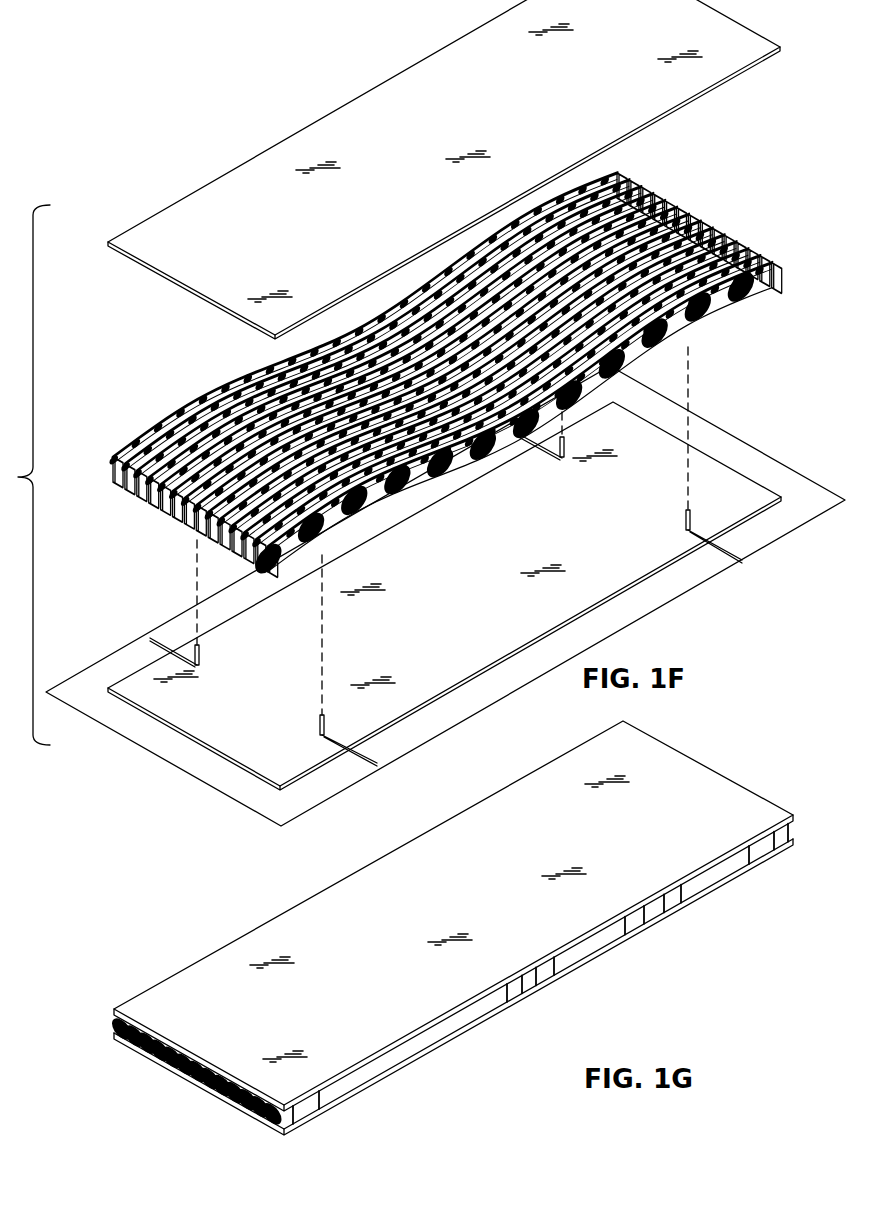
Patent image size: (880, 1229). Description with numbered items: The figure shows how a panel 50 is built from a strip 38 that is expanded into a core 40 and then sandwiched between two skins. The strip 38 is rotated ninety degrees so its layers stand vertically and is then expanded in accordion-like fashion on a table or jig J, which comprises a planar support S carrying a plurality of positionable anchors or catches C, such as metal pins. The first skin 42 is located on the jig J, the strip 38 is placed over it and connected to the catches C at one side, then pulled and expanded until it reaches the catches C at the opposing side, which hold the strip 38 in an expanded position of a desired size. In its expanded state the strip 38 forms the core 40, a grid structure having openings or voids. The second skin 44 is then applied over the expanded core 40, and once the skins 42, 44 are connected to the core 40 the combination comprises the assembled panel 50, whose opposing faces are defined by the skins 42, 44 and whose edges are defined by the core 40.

In FIG. 1F, the strip 38 is at (719, 231).
In FIG. 1F, the core 40 is at (453, 370).
In FIG. 1G, the core 40 is at (722, 870).
In FIG. 1F, the first skin 42 is at (202, 728).
In FIG. 1G, the first skin 42 is at (301, 1121).
In FIG. 1F, the second skin 44 is at (188, 273).
In FIG. 1G, the second skin 44 is at (144, 998).
In FIG. 1G, the panel 50 is at (444, 931).
In FIG. 1F, the jig J is at (744, 428).
In FIG. 1F, the planar support S is at (767, 470).
In FIG. 1F, the catches C is at (322, 727).